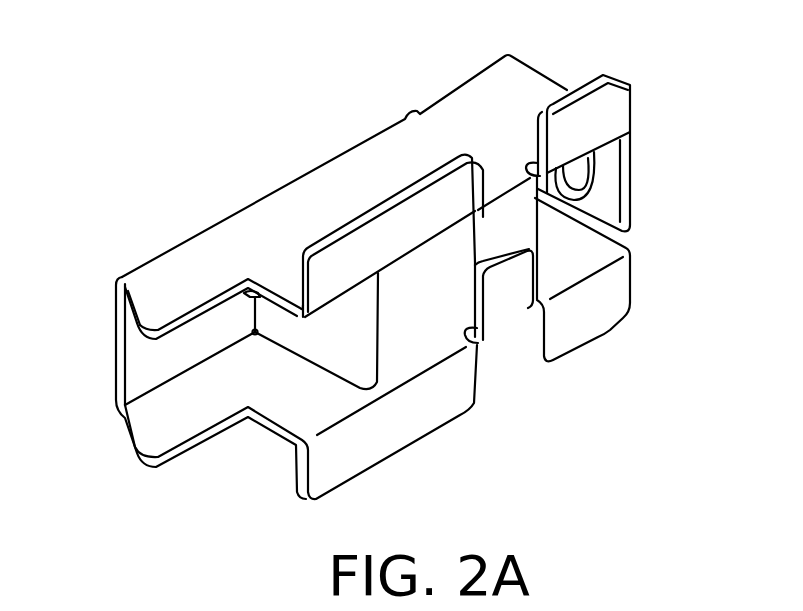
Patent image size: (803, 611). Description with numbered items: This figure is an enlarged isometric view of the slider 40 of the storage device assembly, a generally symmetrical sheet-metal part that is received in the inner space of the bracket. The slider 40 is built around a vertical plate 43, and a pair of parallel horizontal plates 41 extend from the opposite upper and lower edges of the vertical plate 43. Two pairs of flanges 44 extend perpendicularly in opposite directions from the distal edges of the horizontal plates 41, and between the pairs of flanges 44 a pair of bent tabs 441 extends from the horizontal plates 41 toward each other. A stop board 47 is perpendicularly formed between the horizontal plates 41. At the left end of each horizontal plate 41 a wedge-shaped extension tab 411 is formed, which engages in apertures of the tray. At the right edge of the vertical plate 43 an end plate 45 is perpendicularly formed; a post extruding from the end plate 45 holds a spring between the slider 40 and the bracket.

The slider 40 is at (374, 283).
The horizontal plate 41 is at (218, 250).
The wedge-shaped extension tab 411 is at (147, 306).
The vertical plate 43 is at (152, 365).
The flange 44 is at (393, 228).
The bent tab 441 is at (505, 298).
The end plate 45 is at (607, 183).
The stop board 47 is at (337, 337).